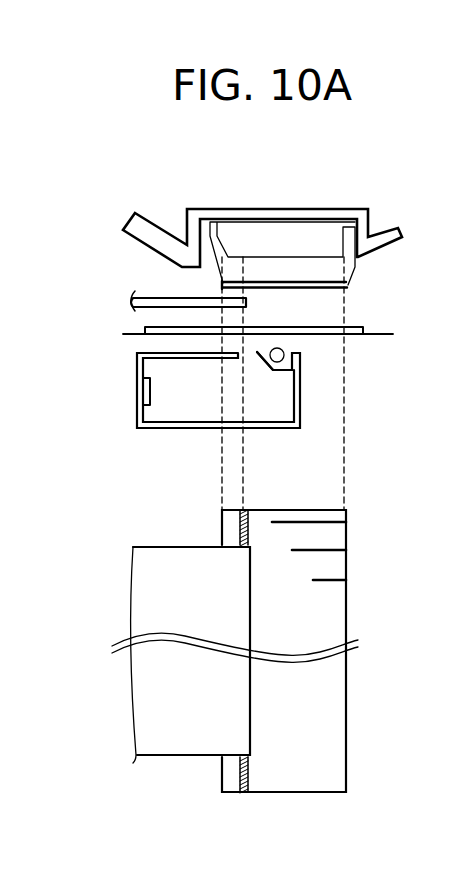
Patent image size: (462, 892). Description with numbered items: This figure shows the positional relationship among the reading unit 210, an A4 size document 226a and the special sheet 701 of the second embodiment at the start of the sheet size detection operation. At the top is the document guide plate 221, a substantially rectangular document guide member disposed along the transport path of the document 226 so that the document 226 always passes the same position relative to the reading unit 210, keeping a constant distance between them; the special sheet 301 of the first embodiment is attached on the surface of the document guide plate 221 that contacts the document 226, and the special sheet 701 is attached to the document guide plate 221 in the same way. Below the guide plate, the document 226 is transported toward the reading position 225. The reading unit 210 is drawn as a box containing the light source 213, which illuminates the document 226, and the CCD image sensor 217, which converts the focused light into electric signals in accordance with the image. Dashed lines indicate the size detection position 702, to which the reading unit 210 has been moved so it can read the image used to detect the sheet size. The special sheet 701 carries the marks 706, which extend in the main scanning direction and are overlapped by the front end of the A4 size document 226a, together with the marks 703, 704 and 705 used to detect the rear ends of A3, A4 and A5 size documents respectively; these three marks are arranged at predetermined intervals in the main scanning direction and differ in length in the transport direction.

The document guide plate 221 is at (285, 272).
The special sheet 301 is at (323, 290).
The document 226 is at (143, 294).
The reading position 225 is at (150, 327).
The CCD image sensor 217 is at (137, 385).
The reading unit 210 is at (137, 410).
The light source 213 is at (280, 362).
The size detection position 702 is at (243, 473).
The A4 size document 226a is at (133, 546).
The marks 706 is at (240, 523).
The mark 703 is at (347, 522).
The mark 704 is at (347, 550).
The mark 705 is at (347, 580).
The special sheet 701 is at (347, 698).